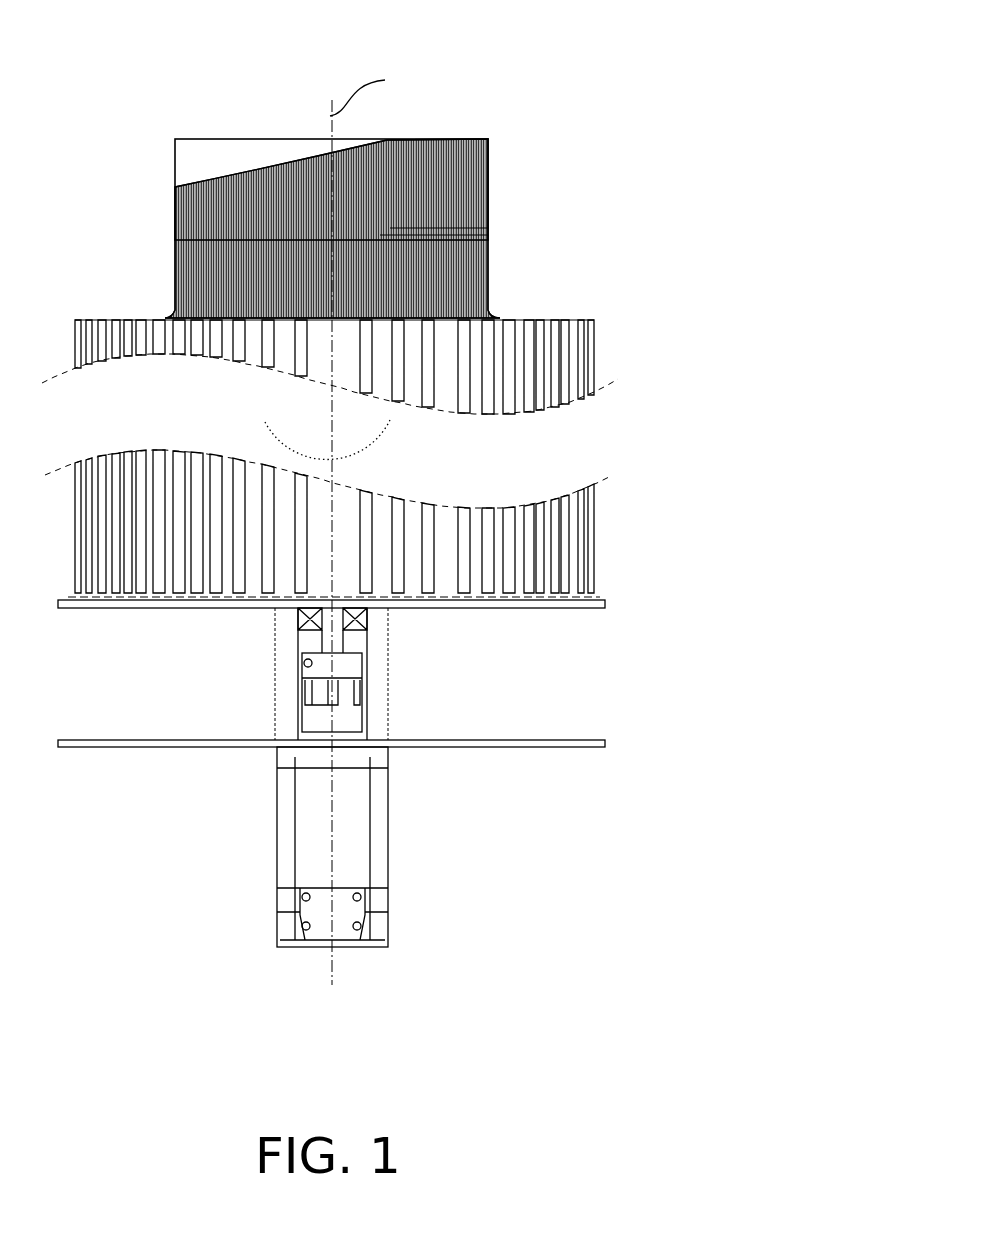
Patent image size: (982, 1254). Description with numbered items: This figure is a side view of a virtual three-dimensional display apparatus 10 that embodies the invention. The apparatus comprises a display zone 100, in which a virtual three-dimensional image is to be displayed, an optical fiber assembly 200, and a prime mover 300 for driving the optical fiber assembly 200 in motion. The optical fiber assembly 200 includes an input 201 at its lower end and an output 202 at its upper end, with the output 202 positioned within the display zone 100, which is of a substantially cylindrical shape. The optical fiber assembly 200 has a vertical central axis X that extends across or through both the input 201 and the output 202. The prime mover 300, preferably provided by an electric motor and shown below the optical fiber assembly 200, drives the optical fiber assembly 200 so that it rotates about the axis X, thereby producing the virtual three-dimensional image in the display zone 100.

The virtual 3D display apparatus 10 is at (662, 91).
The display zone 100 is at (174, 145).
The optical fiber assembly 200 is at (652, 428).
The input 201 is at (655, 592).
The output 202 is at (541, 192).
The prime mover 300 is at (355, 826).